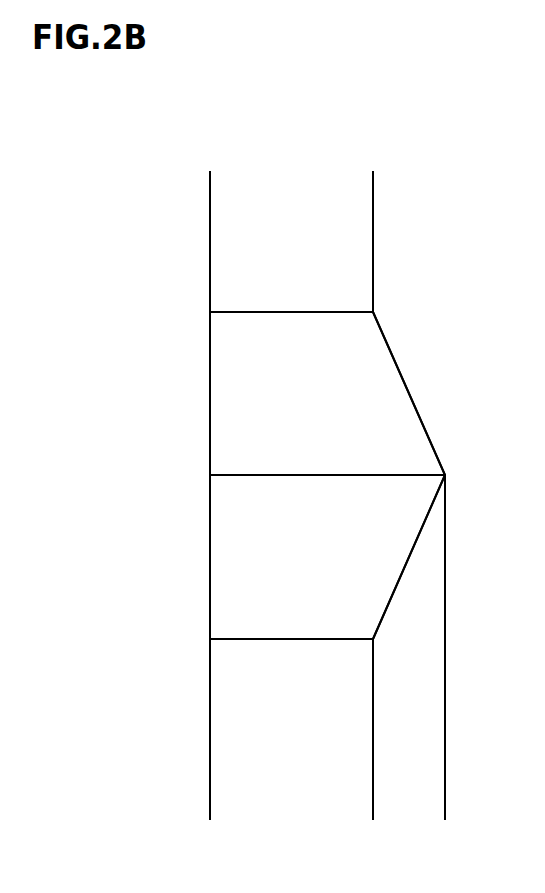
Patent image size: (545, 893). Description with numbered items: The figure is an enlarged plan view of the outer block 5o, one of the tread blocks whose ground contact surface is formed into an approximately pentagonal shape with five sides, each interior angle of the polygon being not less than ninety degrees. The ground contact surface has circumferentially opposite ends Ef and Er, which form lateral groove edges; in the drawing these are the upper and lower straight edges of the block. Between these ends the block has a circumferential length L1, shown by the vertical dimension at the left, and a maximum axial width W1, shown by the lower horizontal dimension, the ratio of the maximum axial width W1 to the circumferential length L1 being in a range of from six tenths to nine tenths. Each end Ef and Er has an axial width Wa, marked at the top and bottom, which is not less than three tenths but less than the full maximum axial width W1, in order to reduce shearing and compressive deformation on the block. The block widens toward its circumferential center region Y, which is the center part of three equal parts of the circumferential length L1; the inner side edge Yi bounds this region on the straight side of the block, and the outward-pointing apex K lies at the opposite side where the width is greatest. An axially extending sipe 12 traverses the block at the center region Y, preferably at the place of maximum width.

The outer block 5o is at (413, 297).
The sipe 12 is at (372, 473).
The apex corner K is at (456, 462).
The circumferential end Ef is at (290, 312).
The circumferential end Er is at (290, 640).
The inner side edge Yi is at (197, 464).
The circumferential center region Y is at (167, 423).
The circumferential length L1 is at (210, 639).
The axial width Wa is at (210, 177).
The maximum axial width W1 is at (210, 813).